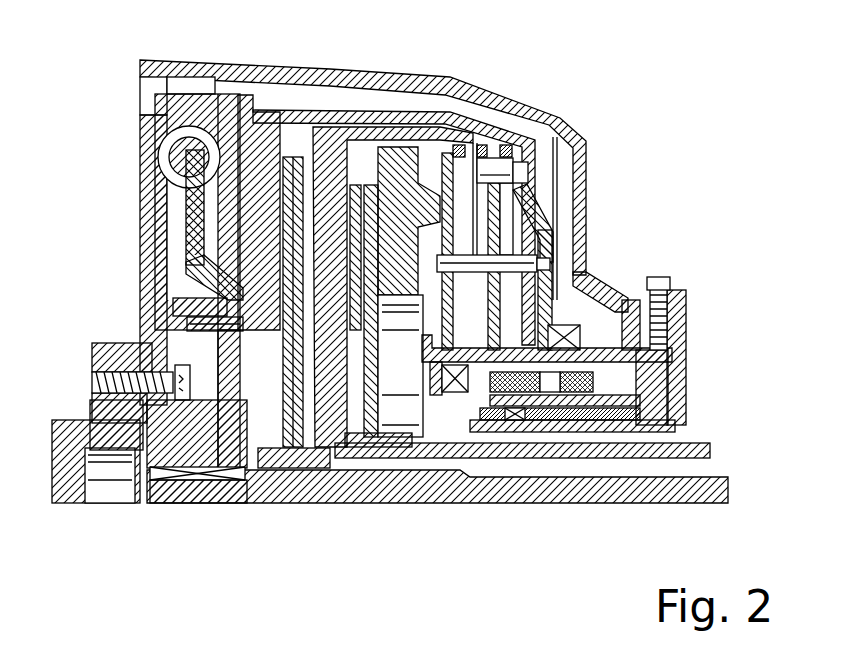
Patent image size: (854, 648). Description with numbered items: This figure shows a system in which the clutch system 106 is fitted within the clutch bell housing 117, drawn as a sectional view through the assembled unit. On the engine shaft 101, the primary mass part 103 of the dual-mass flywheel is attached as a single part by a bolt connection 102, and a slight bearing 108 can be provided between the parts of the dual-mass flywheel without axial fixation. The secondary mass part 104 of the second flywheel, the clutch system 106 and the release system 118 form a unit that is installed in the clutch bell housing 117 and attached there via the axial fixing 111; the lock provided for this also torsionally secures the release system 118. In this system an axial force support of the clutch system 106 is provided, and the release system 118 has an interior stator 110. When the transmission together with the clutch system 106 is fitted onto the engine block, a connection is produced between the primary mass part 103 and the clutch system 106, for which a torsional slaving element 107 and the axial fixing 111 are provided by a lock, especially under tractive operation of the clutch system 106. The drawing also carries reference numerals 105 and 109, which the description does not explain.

The engine shaft 101 is at (68, 505).
The bolt connection 102 is at (128, 367).
The primary mass part 103 is at (157, 232).
The secondary mass part 104 is at (262, 137).
The wedge element 105 is at (202, 474).
The clutch system 106 is at (182, 440).
The torsional slaving element 107 is at (228, 510).
The bearing 108 is at (197, 303).
The bearing 109 is at (566, 328).
The interior stator 110 is at (588, 415).
The axial fixing 111 is at (668, 342).
The clutch bell housing 117 is at (520, 117).
The release system 118 is at (538, 400).